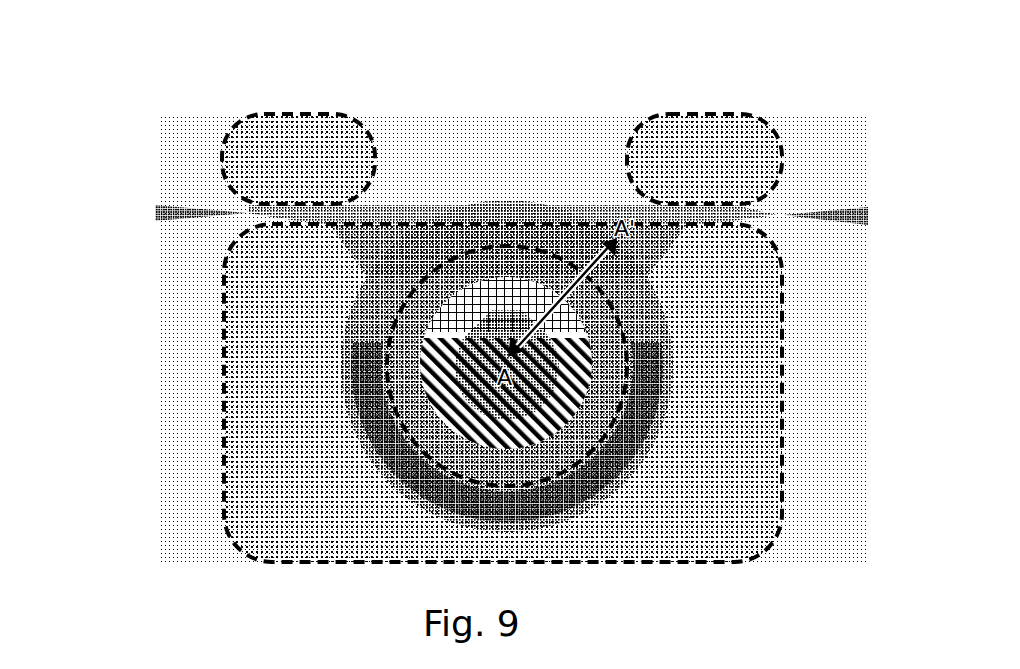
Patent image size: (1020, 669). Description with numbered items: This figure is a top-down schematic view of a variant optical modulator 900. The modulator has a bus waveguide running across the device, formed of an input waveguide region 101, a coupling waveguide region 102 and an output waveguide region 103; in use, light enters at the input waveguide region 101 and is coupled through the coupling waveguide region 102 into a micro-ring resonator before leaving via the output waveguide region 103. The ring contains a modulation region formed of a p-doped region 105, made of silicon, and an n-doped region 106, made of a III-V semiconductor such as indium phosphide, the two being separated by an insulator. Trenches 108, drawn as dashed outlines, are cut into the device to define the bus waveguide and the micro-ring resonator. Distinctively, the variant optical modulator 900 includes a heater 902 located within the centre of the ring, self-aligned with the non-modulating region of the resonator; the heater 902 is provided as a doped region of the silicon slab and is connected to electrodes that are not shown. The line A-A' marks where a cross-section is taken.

The variant optical modulator 900 is at (220, 74).
The input waveguide region 101 is at (180, 207).
The coupling waveguide region 102 is at (482, 212).
The output waveguide region 103 is at (845, 207).
The p-doped region 105 is at (438, 366).
The n-doped region 106 is at (360, 424).
The trenches 108 is at (322, 113).
The heater 902 is at (453, 315).